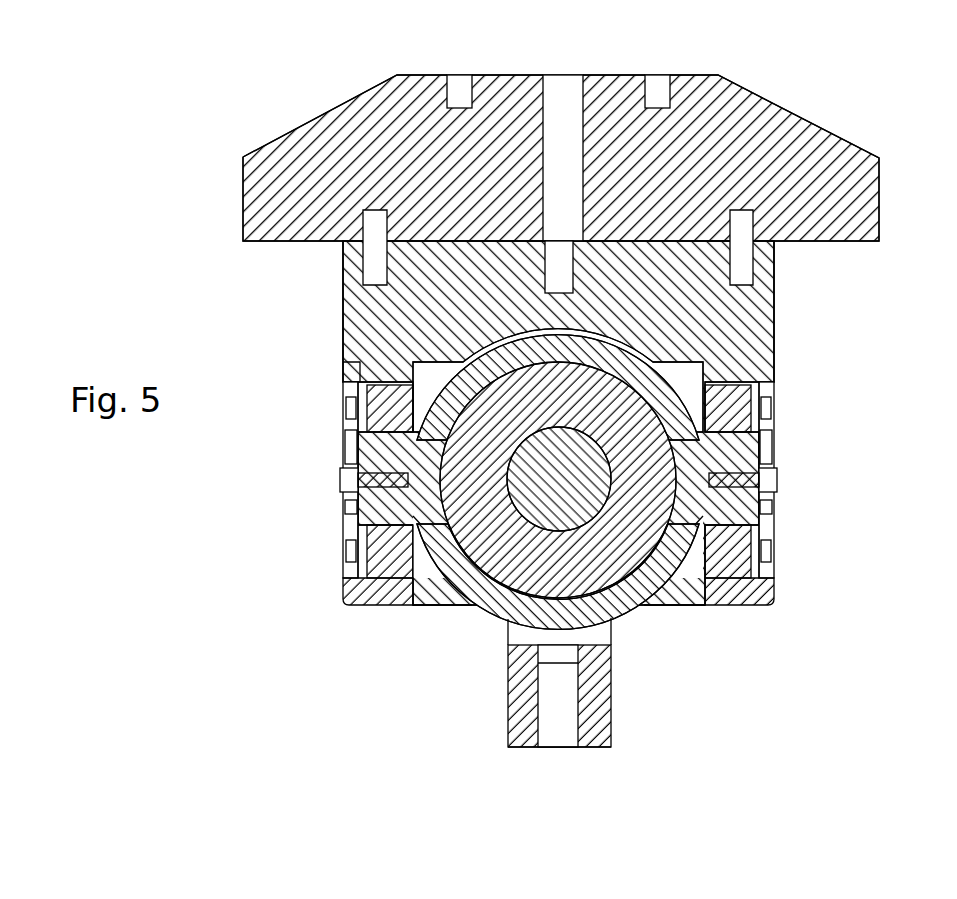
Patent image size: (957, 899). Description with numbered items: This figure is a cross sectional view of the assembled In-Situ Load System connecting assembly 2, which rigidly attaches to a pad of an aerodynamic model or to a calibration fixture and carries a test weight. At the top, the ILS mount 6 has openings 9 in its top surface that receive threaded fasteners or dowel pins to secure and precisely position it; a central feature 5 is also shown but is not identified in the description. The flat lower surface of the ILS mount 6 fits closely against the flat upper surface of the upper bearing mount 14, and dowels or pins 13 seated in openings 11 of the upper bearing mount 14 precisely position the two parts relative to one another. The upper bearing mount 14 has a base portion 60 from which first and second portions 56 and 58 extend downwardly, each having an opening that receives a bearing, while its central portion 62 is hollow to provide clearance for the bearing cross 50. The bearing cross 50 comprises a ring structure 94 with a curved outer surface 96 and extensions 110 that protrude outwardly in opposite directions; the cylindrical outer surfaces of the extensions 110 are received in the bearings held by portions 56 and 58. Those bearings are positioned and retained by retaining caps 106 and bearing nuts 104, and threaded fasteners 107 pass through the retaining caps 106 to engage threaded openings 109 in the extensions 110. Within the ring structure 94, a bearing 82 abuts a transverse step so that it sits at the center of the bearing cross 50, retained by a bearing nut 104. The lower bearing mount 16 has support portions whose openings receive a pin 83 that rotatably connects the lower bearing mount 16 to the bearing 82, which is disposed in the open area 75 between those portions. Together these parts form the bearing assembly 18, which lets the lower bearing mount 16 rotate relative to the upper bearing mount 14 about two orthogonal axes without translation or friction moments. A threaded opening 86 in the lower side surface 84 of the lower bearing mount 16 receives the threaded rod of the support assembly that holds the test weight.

The connecting assembly 2 is at (559, 453).
The central slot 5 is at (562, 97).
The ILS mount 6 is at (400, 102).
The openings 9 is at (459, 95).
The openings 11 is at (372, 261).
The dowels or pins 13 is at (380, 232).
The upper bearing mount 14 is at (343, 300).
The lower bearing mount 16 is at (529, 714).
The bearing assembly 18 is at (452, 606).
The bearing cross 50 is at (640, 600).
The first downwardly extending portion 56 is at (343, 591).
The second downwardly extending portion 58 is at (775, 593).
The base portion 60 is at (774, 278).
The central portion 62 is at (360, 375).
The open area 75 is at (522, 632).
The bearing 82 is at (491, 506).
The pin 83 is at (505, 580).
The lower side surface 84 is at (525, 750).
The threaded opening 86 is at (560, 735).
The ring structure 94 is at (660, 580).
The curved outer surface 96 is at (663, 355).
The bearing nut 104 is at (347, 533).
The retaining caps 106 is at (343, 505).
The threaded fasteners 107 is at (340, 483).
The threaded openings 109 is at (340, 467).
The extensions 110 is at (385, 445).